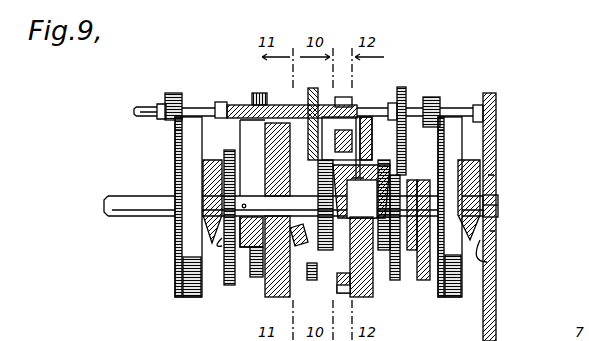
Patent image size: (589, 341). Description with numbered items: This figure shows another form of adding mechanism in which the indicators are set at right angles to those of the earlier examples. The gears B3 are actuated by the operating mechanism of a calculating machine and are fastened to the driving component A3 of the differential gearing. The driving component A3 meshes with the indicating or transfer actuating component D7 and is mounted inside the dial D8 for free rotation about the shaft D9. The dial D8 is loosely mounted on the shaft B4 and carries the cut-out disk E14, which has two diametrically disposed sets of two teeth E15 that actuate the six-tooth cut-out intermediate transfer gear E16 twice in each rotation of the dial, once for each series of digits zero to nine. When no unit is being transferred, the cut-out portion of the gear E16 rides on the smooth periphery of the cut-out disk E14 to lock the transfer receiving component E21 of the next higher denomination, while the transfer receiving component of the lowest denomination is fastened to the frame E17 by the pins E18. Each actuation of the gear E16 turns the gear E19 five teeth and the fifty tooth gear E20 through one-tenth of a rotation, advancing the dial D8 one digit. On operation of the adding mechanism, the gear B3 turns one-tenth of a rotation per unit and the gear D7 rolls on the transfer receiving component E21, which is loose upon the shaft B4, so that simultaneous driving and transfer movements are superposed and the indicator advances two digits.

The shaft B4 is at (122, 198).
The teeth E15 is at (168, 214).
The six-tooth cut-out intermediate transfer gear E16 is at (179, 84).
The gear E19 is at (229, 100).
The dial D8 is at (188, 297).
The cut-out disk E14 is at (176, 134).
The indicating or transfer actuating component D7 is at (211, 163).
The driving component A3 is at (252, 165).
The shaft D9 is at (358, 116).
The gear B3 is at (333, 263).
The fifty tooth gear E20 is at (228, 286).
The transfer receiving component E21 is at (218, 250).
The frame E17 is at (497, 134).
The pins E18 is at (496, 176).